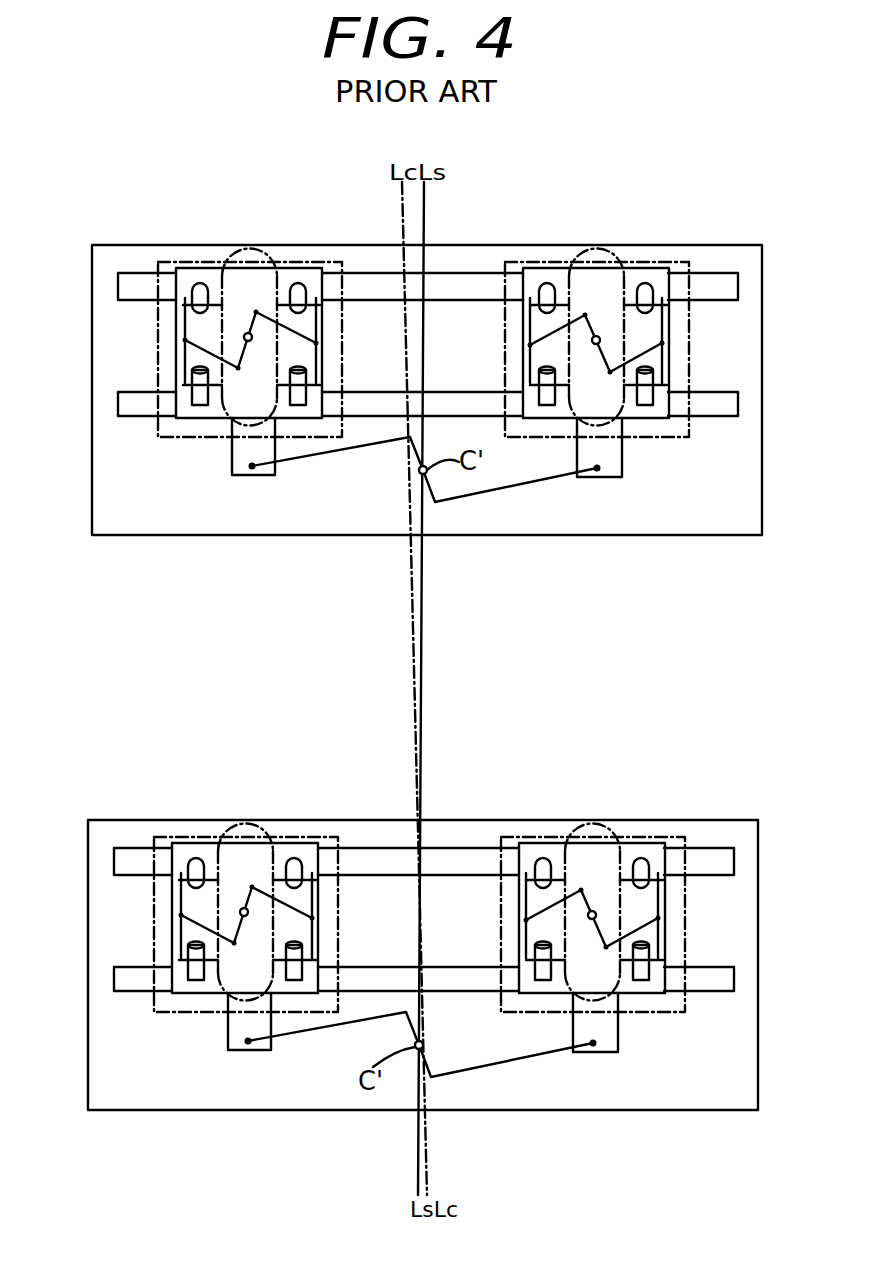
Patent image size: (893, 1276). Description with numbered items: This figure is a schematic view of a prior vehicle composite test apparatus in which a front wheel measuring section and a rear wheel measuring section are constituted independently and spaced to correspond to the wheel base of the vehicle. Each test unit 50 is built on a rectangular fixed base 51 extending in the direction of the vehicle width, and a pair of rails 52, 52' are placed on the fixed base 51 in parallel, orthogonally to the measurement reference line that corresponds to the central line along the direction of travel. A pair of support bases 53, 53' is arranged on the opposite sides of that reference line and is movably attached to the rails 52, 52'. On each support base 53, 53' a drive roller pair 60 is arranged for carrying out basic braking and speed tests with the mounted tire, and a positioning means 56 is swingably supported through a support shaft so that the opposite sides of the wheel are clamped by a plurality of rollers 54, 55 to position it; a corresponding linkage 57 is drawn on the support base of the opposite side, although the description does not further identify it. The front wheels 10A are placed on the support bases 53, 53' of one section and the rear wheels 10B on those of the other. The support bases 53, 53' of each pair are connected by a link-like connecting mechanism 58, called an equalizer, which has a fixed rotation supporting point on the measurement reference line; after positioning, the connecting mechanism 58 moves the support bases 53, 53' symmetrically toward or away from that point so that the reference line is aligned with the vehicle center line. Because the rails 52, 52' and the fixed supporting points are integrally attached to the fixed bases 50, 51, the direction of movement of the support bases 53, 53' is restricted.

The fixed base 50 is at (113, 500).
The fixed base 51 is at (762, 490).
The rail 52 is at (426, 528).
The rail 52' is at (474, 702).
The support base 53 is at (650, 721).
The support base 53' is at (216, 750).
The roller 54 is at (300, 288).
The roller 55 is at (180, 383).
The positioning means 56 is at (316, 343).
The linkage 57 is at (530, 363).
The connecting mechanism 58 is at (350, 448).
The drive roller pair 60 is at (660, 262).
The front wheels 10A is at (258, 242).
The rear wheels 10B is at (237, 840).